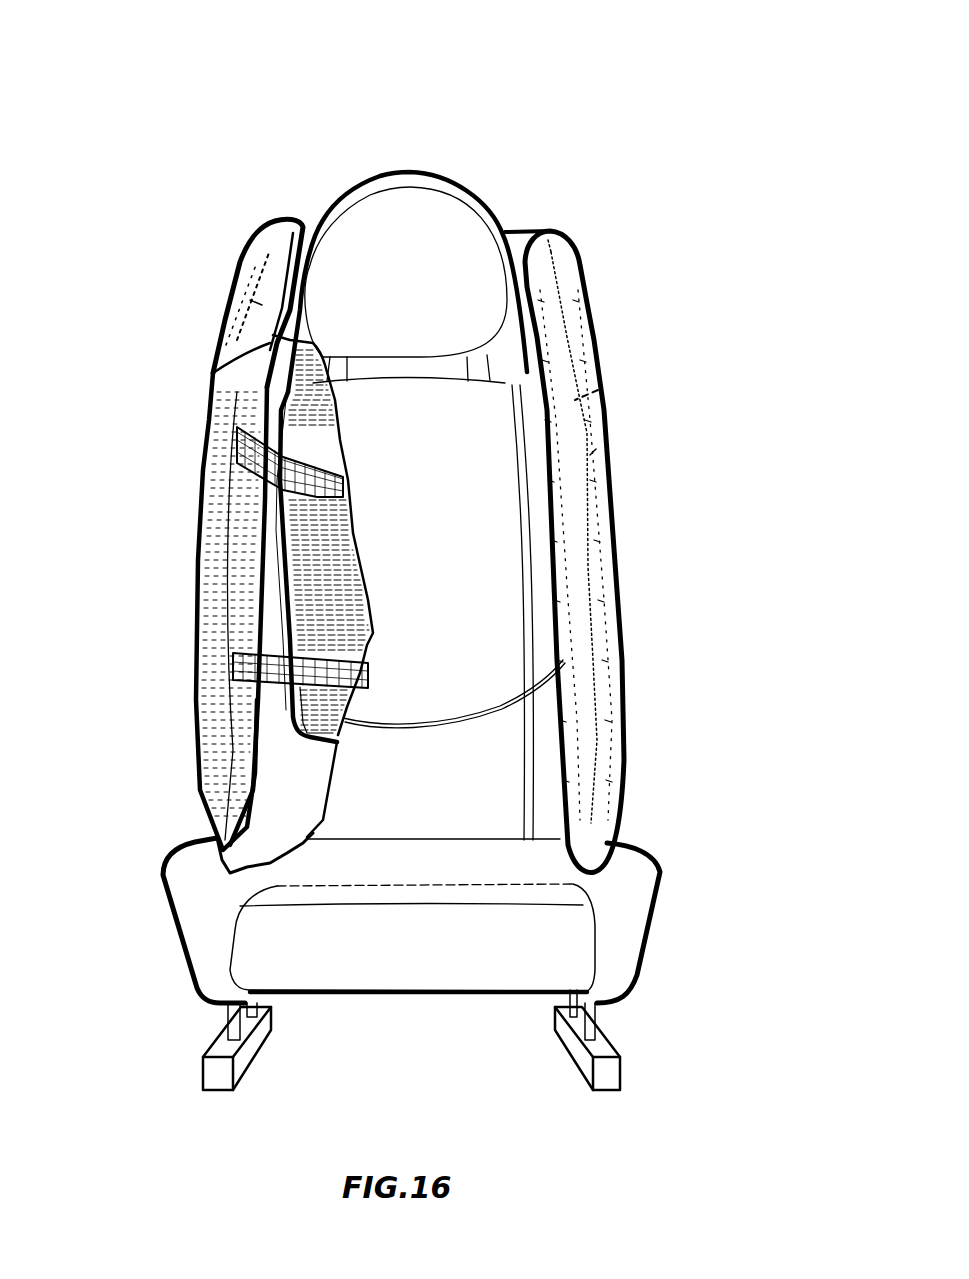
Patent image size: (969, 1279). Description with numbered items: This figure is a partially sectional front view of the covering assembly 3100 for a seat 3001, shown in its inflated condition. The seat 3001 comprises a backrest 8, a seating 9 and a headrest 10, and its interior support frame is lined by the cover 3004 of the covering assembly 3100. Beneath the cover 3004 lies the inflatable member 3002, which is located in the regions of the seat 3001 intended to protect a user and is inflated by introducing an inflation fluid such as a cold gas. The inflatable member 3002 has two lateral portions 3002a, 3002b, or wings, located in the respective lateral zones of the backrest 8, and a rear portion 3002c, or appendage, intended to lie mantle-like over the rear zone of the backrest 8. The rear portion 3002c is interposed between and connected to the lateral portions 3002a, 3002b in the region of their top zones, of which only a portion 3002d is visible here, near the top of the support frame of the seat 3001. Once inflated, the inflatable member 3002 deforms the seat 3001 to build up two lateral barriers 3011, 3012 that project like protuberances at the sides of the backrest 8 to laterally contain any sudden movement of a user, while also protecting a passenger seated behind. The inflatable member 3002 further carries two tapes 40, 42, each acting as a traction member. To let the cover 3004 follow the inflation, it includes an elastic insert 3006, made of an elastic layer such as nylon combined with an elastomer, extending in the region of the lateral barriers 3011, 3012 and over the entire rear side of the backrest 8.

The seat 3001 is at (147, 97).
The backrest 8 is at (393, 698).
The seating 9 is at (323, 922).
The headrest 10 is at (420, 226).
The tape 40 is at (240, 464).
The tape 42 is at (235, 672).
The inflatable member 3002 is at (197, 536).
The lateral portion 3002a is at (600, 388).
The lateral portion 3002b is at (237, 596).
The rear portion 3002c is at (310, 420).
The portion of top zone 3002d is at (291, 340).
The cover 3004 is at (620, 573).
The elastic insert 3006 is at (254, 296).
The lateral barrier 3011 is at (232, 265).
The lateral barrier 3012 is at (598, 243).
The covering assembly 3100 is at (528, 227).